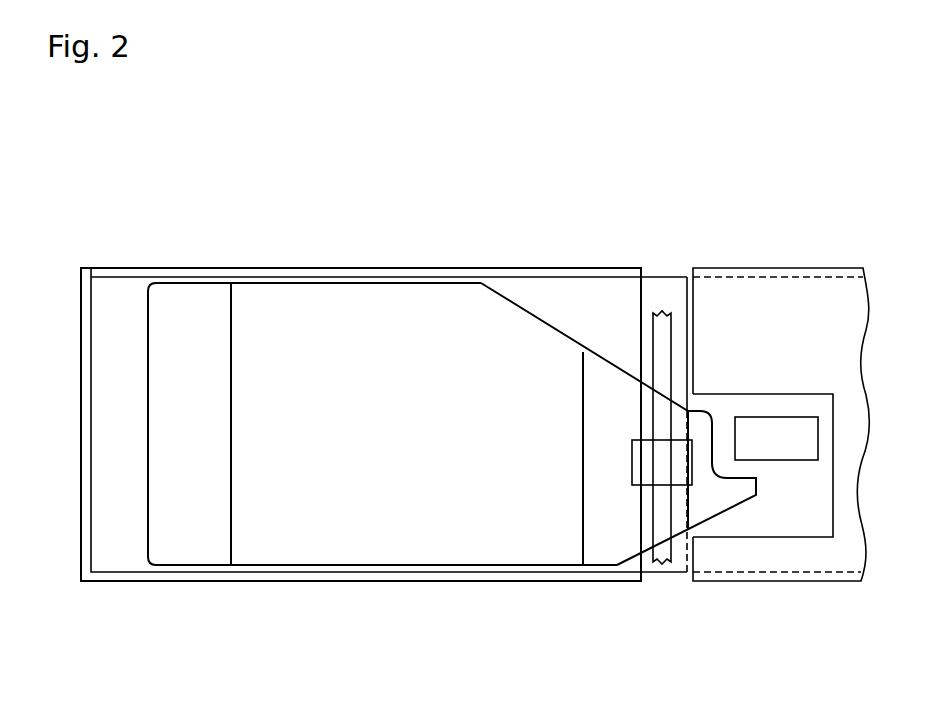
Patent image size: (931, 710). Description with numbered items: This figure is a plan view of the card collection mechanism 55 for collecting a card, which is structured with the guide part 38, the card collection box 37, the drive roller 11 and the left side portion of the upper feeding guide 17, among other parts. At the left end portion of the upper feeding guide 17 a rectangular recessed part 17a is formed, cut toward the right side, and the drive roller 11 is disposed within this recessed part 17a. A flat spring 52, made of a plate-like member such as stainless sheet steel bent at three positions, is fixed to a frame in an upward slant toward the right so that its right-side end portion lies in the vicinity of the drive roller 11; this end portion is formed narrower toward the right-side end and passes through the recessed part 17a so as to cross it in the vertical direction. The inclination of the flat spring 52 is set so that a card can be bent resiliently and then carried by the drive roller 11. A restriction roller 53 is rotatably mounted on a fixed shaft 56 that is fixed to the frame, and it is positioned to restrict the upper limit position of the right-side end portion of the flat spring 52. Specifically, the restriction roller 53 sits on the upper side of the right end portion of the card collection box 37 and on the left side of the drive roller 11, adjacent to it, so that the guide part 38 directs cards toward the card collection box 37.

The card collection box 37 is at (133, 583).
The flat spring 52 is at (372, 283).
The guide part 38 is at (600, 308).
The fixed shaft 56 is at (672, 331).
The restriction roller 53 is at (632, 460).
The upper feeding guide 17 is at (820, 268).
The recessed part 17a is at (832, 517).
The drive roller 11 is at (806, 417).
The card collection mechanism 55 is at (667, 138).